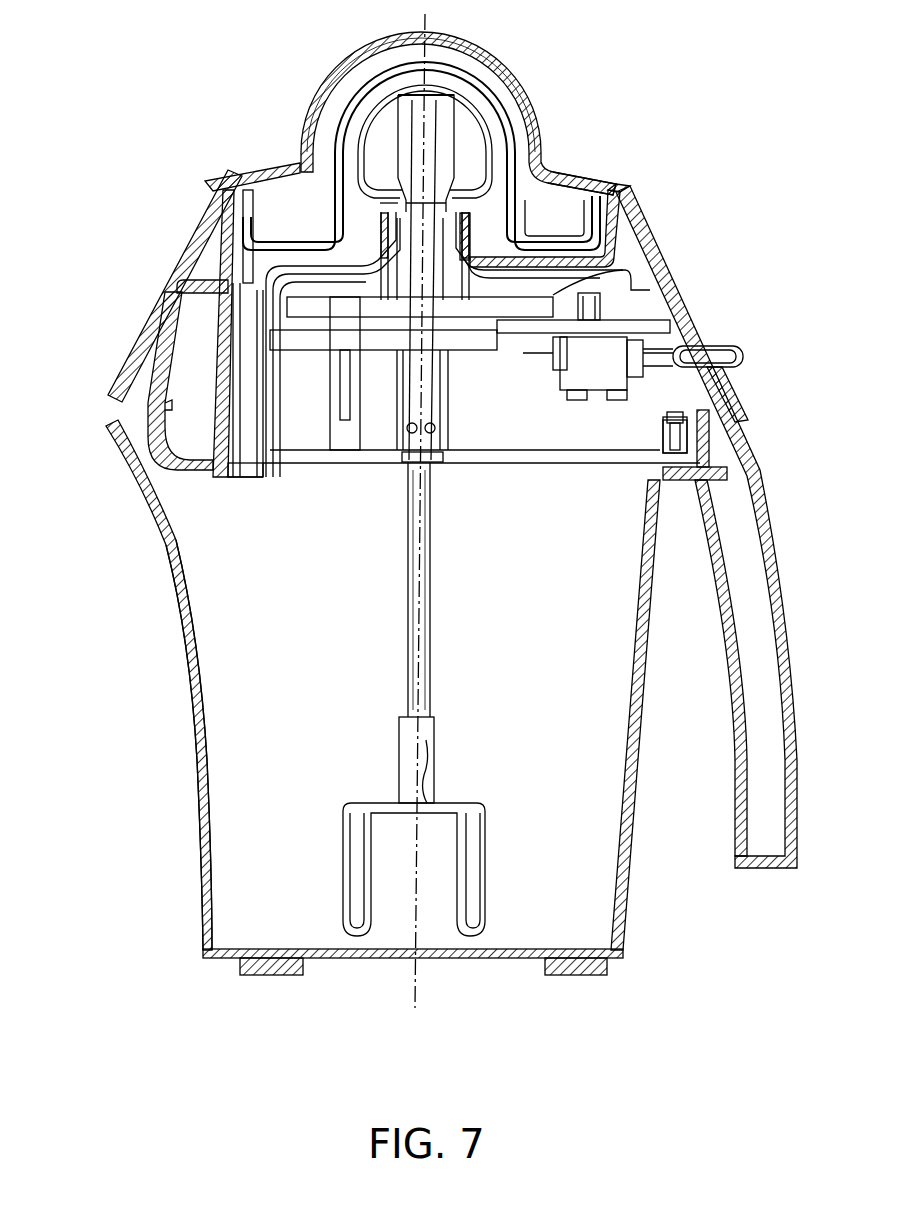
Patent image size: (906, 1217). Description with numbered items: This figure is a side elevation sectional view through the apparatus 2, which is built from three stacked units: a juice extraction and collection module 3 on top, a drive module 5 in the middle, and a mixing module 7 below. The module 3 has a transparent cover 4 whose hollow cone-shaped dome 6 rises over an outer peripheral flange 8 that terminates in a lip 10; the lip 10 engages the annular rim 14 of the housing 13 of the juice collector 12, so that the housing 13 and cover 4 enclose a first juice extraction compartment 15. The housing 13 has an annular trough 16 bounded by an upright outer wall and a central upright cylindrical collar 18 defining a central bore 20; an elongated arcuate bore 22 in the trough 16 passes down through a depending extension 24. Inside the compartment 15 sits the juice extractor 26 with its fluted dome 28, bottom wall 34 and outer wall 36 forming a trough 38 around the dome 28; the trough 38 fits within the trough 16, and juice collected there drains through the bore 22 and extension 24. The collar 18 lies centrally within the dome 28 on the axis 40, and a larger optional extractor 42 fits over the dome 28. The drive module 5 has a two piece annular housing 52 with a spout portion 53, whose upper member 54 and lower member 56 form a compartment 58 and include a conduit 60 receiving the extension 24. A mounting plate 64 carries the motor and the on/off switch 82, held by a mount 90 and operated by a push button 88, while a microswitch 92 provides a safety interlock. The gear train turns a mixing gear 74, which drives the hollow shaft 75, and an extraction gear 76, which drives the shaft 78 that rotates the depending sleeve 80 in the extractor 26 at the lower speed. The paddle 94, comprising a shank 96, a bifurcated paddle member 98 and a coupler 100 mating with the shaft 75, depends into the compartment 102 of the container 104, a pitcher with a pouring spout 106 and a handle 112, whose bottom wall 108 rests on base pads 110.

The apparatus 2 is at (760, 206).
The juice extraction and collection module 3 is at (192, 90).
The cover 4 is at (518, 64).
The drive module 5 is at (88, 304).
The dome 6 is at (480, 52).
The mixing module 7 is at (133, 629).
The outer peripheral flange 8 is at (235, 180).
The lip 10 is at (626, 185).
The juice collector 12 is at (203, 220).
The housing 13 is at (650, 268).
The annular rim 14 is at (633, 202).
The first juice extraction compartment 15 is at (297, 200).
The annular trough 16 is at (307, 267).
The central upright cylindrical collar 18 is at (470, 247).
The central bore 20 is at (408, 215).
The elongated arcuate bore 22 is at (240, 370).
The extension 24 is at (217, 310).
The juice extractor 26 is at (507, 167).
The fluted dome 28 is at (360, 113).
The bottom wall 34 is at (570, 246).
The outer wall 36 is at (257, 220).
The trough 38 is at (548, 207).
The axis 40 is at (415, 1000).
The second hollow extractor 42 is at (513, 147).
The annular housing 52 is at (140, 338).
The spout portion 53 is at (110, 397).
The upper member 54 is at (688, 326).
The lower member 56 is at (445, 465).
The compartment 58 is at (683, 397).
The conduit 60 is at (200, 433).
The mounting plate 64 is at (520, 330).
The mixing gear 74 is at (463, 343).
The hollow shaft 75 is at (410, 400).
The extraction gear 76 is at (613, 257).
The shaft 78 is at (452, 212).
The depending sleeve 80 is at (436, 112).
The on/off switch 82 is at (422, 92).
The push button 88 is at (745, 357).
The mount 90 is at (560, 350).
The microswitch 92 is at (663, 440).
The paddle 94 is at (382, 697).
The shank 96 is at (428, 645).
The bifurcated paddle member 98 is at (372, 800).
The coupler 100 is at (430, 410).
The compartment 102 is at (200, 657).
The container 104 is at (190, 723).
The pouring spout 106 is at (123, 450).
The bottom wall 108 is at (268, 949).
The base pads 110 is at (258, 975).
The handle 112 is at (792, 626).